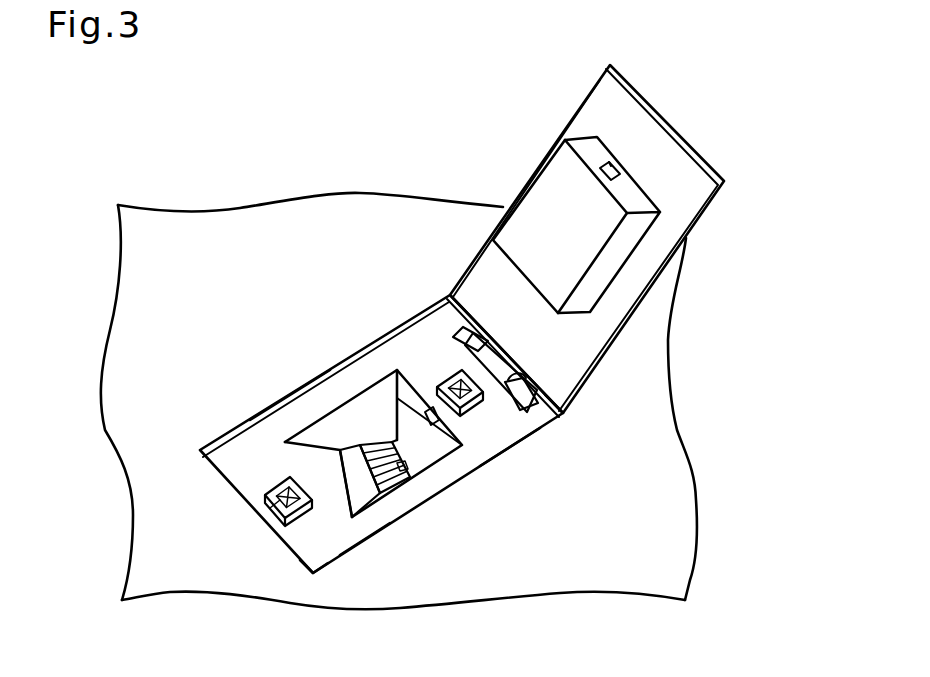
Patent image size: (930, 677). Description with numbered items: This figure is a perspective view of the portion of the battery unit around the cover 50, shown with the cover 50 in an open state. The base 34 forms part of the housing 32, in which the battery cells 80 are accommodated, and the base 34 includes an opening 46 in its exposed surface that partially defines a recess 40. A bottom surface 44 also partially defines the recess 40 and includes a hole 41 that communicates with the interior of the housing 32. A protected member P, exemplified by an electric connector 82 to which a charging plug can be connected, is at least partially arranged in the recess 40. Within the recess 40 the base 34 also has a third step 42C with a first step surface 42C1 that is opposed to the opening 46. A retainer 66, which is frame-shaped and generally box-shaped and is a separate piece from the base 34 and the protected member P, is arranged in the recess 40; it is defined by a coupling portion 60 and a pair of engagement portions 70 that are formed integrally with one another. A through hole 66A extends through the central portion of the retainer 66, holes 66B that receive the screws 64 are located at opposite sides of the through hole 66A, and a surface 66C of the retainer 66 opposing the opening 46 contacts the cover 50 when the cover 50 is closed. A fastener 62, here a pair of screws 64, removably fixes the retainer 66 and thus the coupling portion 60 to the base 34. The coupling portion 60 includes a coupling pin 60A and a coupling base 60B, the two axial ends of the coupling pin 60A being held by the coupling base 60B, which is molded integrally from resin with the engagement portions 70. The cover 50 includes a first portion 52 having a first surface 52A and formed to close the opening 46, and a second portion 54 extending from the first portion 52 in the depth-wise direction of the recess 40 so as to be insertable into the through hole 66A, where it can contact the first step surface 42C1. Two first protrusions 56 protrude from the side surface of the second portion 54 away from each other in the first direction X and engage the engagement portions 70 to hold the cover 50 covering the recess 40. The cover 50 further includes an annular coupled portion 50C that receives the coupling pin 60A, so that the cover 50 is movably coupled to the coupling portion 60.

The housing 32 is at (114, 317).
The base 34 is at (182, 428).
The recess 40 is at (372, 540).
The hole 41 is at (397, 370).
The third step 42C is at (373, 505).
The first step surface 42C1 is at (365, 490).
The bottom surface 44 is at (443, 455).
The opening 46 is at (288, 400).
The cover 50 is at (765, 170).
The coupled portion 50C is at (542, 396).
The first portion 52 is at (712, 201).
The first surface 52A is at (697, 223).
The second portion 54 is at (620, 258).
The first protrusions 56 is at (536, 262).
The coupling portion 60 is at (498, 413).
The coupling pin 60A is at (540, 420).
The coupling base 60B is at (435, 330).
The fastener 62 is at (196, 520).
The screws 64 is at (453, 384).
The retainer 66 is at (385, 251).
The through hole 66A is at (327, 420).
The holes 66B is at (362, 545).
The surface 66C is at (327, 568).
The engagement portions 70 is at (308, 483).
The battery cells 80 is at (516, 550).
The electric connector 82 is at (420, 470).
The protected member P is at (494, 570).
The first direction X is at (277, 265).